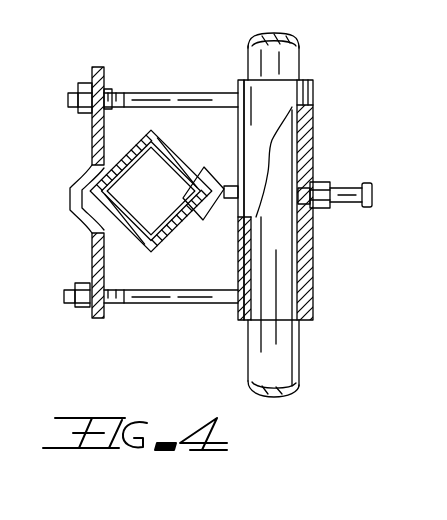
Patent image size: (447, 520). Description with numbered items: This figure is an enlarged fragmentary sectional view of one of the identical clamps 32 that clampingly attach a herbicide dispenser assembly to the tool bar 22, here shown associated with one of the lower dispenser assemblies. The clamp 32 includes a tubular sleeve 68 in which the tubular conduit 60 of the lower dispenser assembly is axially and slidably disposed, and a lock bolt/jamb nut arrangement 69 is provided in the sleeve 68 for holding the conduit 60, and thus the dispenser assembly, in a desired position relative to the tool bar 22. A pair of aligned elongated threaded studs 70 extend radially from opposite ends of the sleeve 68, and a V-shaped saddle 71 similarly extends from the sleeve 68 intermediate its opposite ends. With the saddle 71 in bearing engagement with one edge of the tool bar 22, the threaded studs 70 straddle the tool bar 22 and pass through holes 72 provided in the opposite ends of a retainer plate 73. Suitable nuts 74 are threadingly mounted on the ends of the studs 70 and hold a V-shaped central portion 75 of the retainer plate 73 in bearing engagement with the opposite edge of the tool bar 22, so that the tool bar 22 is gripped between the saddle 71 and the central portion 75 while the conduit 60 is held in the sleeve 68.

The tool bar 22 is at (181, 163).
The clamp 32 is at (222, 86).
The tubular conduit 60 is at (302, 68).
The tubular sleeve 68 is at (312, 122).
The lock bolt/jamb nut arrangement 69 is at (352, 186).
The threaded studs 70 is at (180, 97).
The V-shaped saddle 71 is at (215, 216).
The holes 72 is at (112, 92).
The retainer plate 73 is at (106, 46).
The nuts 74 is at (84, 112).
The V-shaped central portion 75 is at (72, 216).